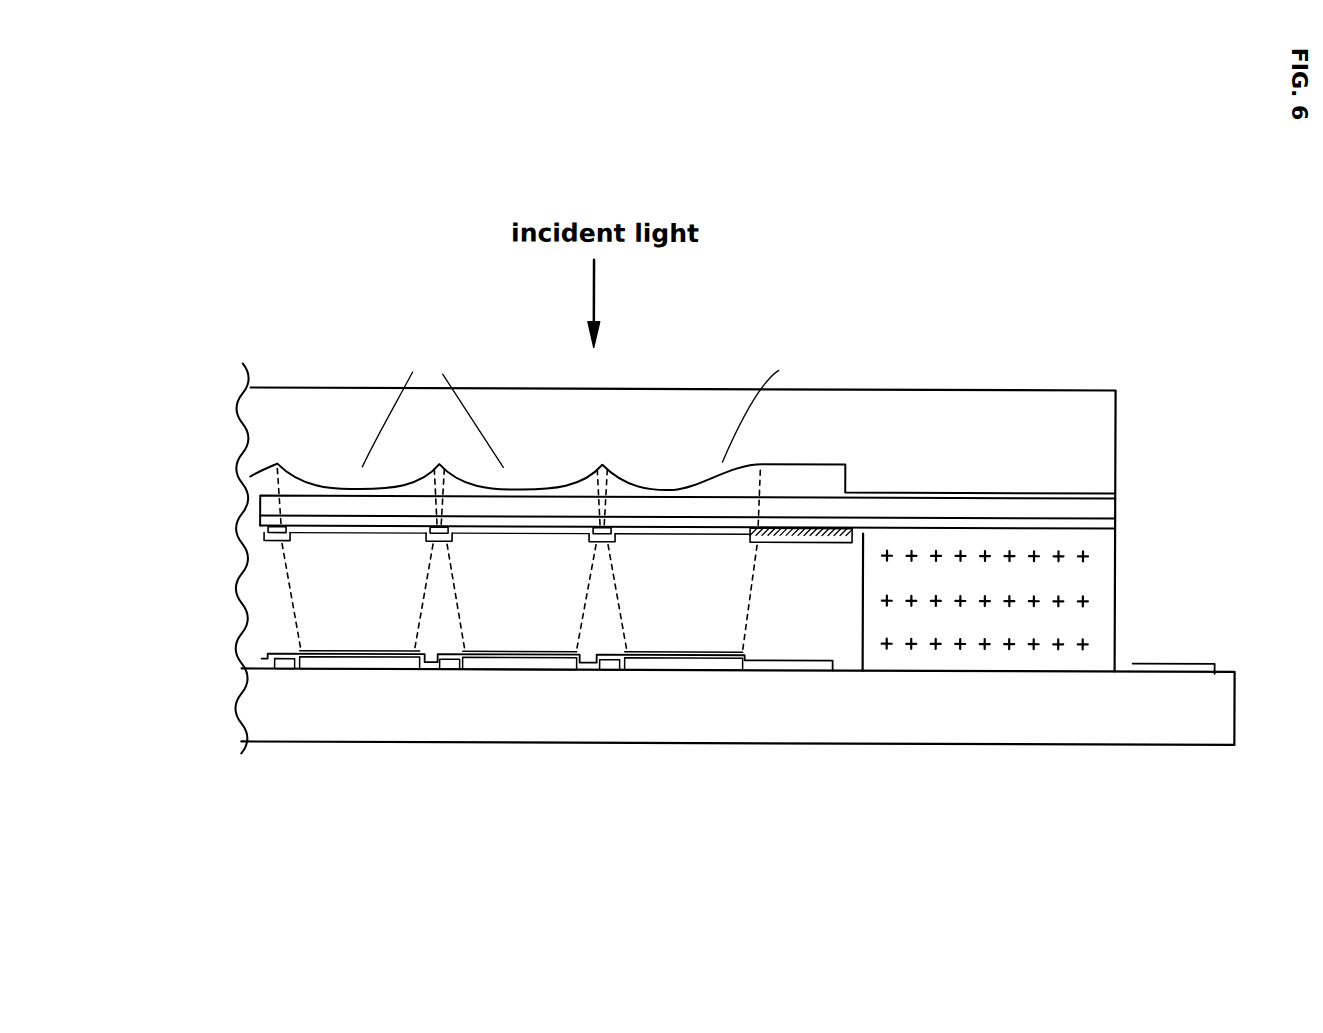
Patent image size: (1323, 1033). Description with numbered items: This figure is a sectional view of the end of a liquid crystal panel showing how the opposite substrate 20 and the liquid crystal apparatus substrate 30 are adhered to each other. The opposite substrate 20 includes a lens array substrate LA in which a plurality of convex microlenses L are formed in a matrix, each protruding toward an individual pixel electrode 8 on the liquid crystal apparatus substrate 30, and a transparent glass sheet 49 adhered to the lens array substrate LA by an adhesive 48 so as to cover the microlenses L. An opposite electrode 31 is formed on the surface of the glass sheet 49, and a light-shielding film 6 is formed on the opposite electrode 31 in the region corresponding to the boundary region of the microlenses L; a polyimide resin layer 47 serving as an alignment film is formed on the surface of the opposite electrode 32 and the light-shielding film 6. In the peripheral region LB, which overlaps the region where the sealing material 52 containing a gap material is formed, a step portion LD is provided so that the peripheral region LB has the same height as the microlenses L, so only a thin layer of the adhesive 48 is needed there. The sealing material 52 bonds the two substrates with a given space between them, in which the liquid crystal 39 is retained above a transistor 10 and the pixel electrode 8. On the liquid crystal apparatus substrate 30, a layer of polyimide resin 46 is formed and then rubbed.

The opposite substrate 20 is at (138, 392).
The lens array substrate LA is at (212, 392).
The transparent glass sheet 49 is at (212, 503).
The polyimide resin layer 47 is at (308, 530).
The microlenses L is at (582, 405).
The light-shielding film 6 is at (593, 527).
The adhesive 48 is at (621, 482).
The opposite electrode 32 is at (672, 517).
The opposite electrode 31 is at (900, 405).
The peripheral region LB is at (852, 466).
The step portion LD is at (970, 494).
The polyimide resin layer 46 is at (492, 672).
The liquid crystal 39 is at (515, 620).
The thin film transistor 10 is at (608, 660).
The pixel electrode 8 is at (703, 655).
The sealing material 52 is at (945, 653).
The liquid crystal apparatus substrate 30 is at (1040, 710).